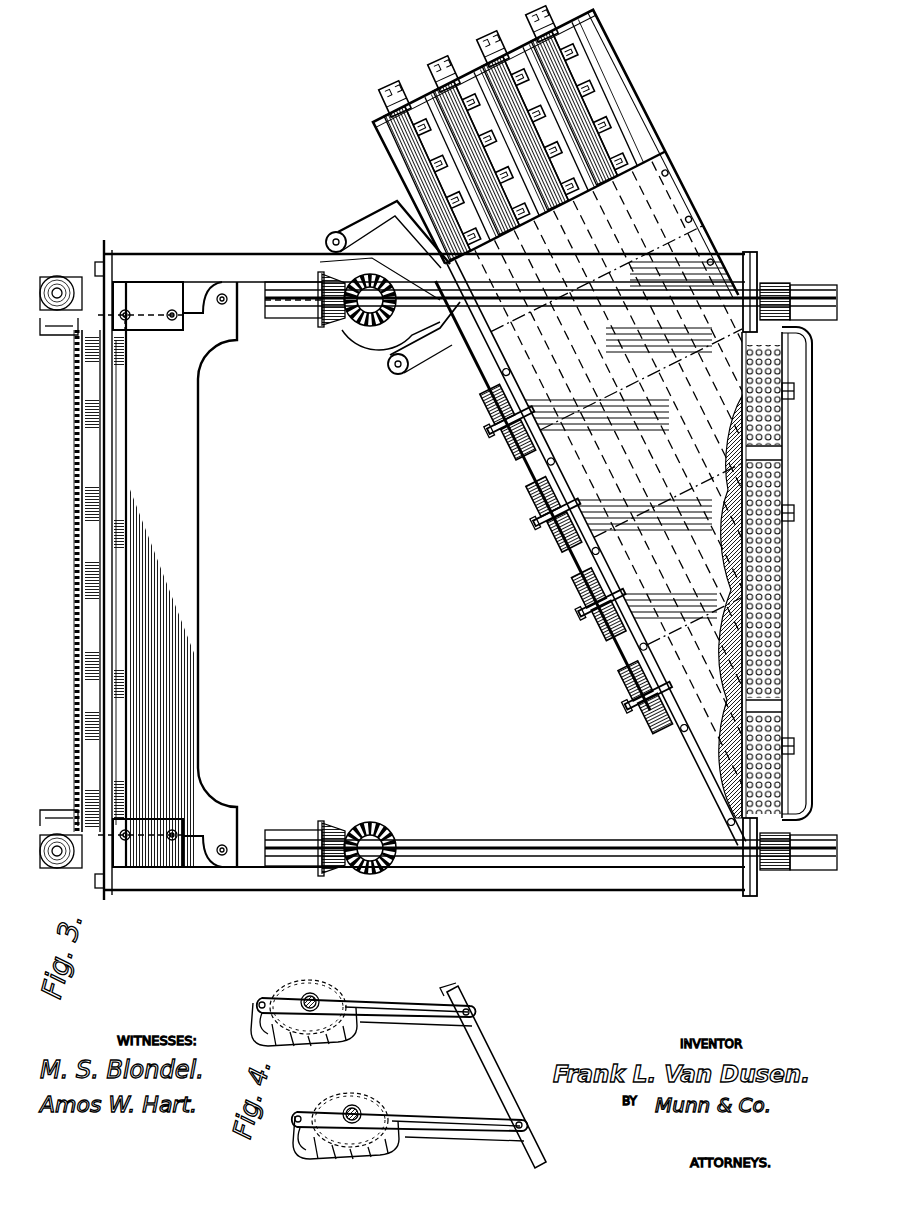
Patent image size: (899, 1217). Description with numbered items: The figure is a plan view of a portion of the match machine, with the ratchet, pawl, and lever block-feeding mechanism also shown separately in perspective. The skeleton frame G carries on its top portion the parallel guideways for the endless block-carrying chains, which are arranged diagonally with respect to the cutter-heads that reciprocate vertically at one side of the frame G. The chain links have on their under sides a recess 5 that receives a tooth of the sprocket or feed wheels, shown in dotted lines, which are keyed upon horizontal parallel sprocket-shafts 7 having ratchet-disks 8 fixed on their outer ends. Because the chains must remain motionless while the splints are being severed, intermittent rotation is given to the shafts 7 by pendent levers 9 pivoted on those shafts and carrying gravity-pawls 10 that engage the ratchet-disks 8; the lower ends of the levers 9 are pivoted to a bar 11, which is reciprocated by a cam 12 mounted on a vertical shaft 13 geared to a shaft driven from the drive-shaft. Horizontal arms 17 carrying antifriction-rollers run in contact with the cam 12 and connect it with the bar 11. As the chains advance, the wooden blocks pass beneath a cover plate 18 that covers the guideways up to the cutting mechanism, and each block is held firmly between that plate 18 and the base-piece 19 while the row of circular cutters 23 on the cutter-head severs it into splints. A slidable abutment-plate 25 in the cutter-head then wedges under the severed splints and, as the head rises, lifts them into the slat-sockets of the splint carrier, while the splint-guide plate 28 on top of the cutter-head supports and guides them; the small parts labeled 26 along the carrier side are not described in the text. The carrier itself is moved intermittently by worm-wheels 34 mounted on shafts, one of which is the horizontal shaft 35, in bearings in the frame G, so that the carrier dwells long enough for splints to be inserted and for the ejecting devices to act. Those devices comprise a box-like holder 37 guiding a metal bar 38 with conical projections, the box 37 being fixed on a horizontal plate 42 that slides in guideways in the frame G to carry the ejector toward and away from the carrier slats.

In FIG. 3, the skeleton frame G is at (236, 262).
In FIG. 3, the recess 5 is at (641, 425).
In FIG. 3, the sprocket-shafts 7 is at (596, 552).
In FIG. 4, the sprocket-shafts 7 is at (309, 996).
In FIG. 3, the ratchet-disks 8 is at (50, 632).
In FIG. 4, the ratchet-disks 8 is at (292, 988).
In FIG. 3, the pendent levers 9 is at (613, 562).
In FIG. 4, the pendent levers 9 is at (392, 1065).
In FIG. 3, the gravity-pawls 10 is at (498, 446).
In FIG. 4, the gravity-pawls 10 is at (308, 1148).
In FIG. 3, the bar 11 is at (603, 650).
In FIG. 4, the bar 11 is at (493, 1075).
In FIG. 3, the cam 12 is at (367, 332).
In FIG. 3, the vertical shaft 13 is at (340, 306).
In FIG. 4, the vertical shaft 13 is at (262, 1010).
In FIG. 3, the horizontal arms 17 is at (350, 226).
In FIG. 3, the plate 18 is at (676, 206).
In FIG. 3, the base-piece 19 is at (807, 573).
In FIG. 3, the cutters 23 is at (742, 787).
In FIG. 3, the slidable abutment-plate 25 is at (792, 512).
In FIG. 3, the block 26 is at (790, 392).
In FIG. 3, the splint-guide plate 28 is at (776, 446).
In FIG. 3, the worm-wheels 34 is at (62, 276).
In FIG. 3, the shaft 35 is at (532, 303).
In FIG. 3, the box-like holder and guide 37 is at (103, 581).
In FIG. 3, the metal bar 38 is at (78, 582).
In FIG. 3, the horizontal plate 42 is at (160, 574).